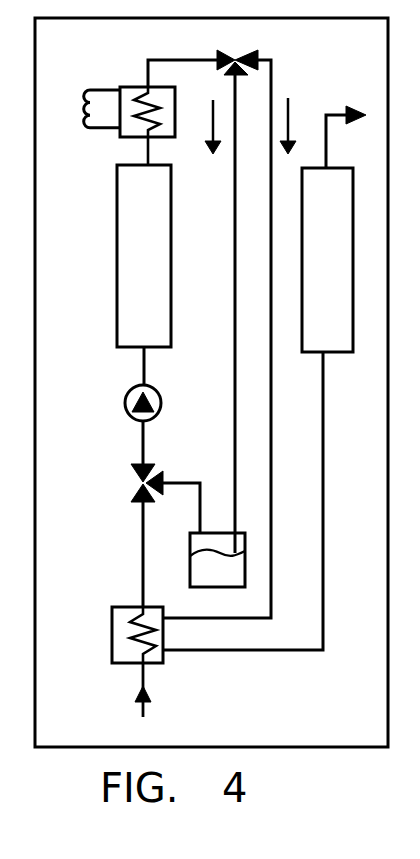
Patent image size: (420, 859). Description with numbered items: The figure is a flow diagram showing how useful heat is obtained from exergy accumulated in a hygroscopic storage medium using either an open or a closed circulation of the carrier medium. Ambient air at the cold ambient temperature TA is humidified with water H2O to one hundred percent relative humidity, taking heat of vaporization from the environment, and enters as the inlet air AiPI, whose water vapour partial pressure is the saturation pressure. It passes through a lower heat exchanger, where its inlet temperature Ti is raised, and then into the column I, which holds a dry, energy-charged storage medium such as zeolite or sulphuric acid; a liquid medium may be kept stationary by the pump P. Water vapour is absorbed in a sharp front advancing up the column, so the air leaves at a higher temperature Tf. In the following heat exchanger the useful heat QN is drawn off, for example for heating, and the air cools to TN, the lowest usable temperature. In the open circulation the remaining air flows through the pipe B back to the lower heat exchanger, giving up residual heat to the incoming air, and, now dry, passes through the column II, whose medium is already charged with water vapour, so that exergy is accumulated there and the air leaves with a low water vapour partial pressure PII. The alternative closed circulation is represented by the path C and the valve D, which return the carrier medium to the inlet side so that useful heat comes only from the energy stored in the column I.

The useful-heat outlet temperature TN is at (182, 78).
The column outlet air temperature Tf is at (129, 132).
The useful heat QN is at (107, 97).
The closed circulation path C is at (206, 127).
The exhaust air pipe B is at (296, 126).
The storage column I is at (144, 256).
The discharged storage column II is at (258, 409).
The water vapour partial pressure of air leaving column II PII is at (346, 137).
The column inlet air temperature Ti is at (122, 366).
The pump P is at (149, 409).
The closed circulation path D is at (165, 535).
The water H2O is at (218, 577).
The ambient inlet temperature TA is at (121, 661).
The inlet air with water vapour partial pressure PI AiPI is at (169, 693).